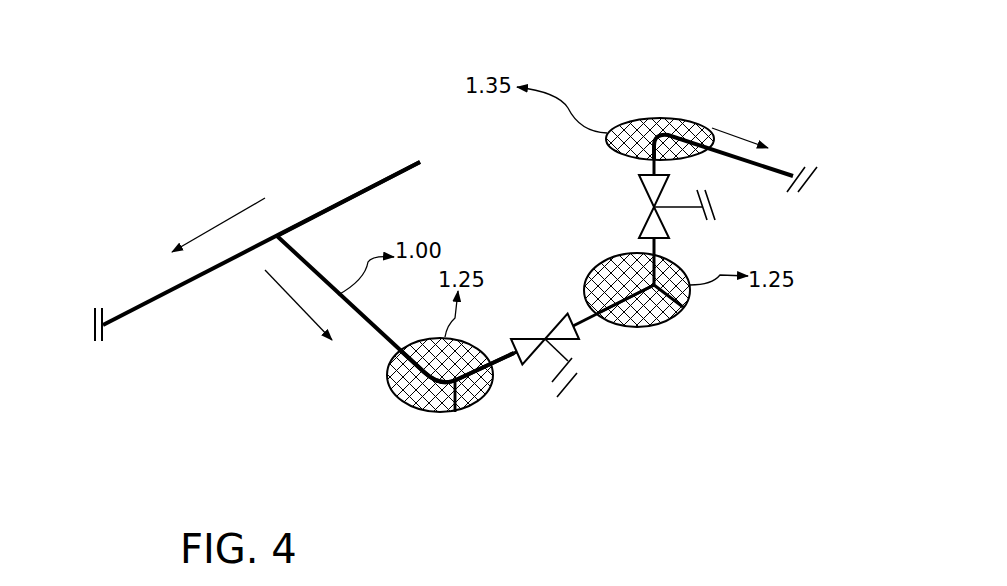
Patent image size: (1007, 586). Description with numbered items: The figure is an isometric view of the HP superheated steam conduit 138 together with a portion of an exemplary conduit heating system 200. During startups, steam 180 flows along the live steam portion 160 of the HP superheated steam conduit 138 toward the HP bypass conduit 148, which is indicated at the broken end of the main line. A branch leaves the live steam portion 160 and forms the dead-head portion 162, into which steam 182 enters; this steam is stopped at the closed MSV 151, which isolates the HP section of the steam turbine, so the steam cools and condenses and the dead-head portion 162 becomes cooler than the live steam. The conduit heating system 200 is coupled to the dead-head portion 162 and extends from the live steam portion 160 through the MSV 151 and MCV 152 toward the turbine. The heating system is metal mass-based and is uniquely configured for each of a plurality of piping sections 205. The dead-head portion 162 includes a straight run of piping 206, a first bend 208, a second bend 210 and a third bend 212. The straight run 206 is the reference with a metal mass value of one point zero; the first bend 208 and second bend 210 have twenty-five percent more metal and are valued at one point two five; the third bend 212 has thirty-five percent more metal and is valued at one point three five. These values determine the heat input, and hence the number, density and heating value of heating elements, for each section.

The HP superheated steam conduit 138 is at (235, 97).
The live steam portion 160 is at (343, 202).
The HP bypass conduit 148 is at (132, 311).
The steam 180 is at (222, 222).
The straight run of piping 206 is at (297, 254).
The steam 182 is at (282, 295).
The conduit heating system 200 is at (337, 360).
The dead-head portion 162 is at (368, 388).
The first bend 208 is at (455, 412).
The MSV 151 is at (575, 340).
The second bend 210 is at (687, 305).
The MCV 152 is at (669, 237).
The third bend 212 is at (658, 118).
The piping sections 205 is at (605, 150).